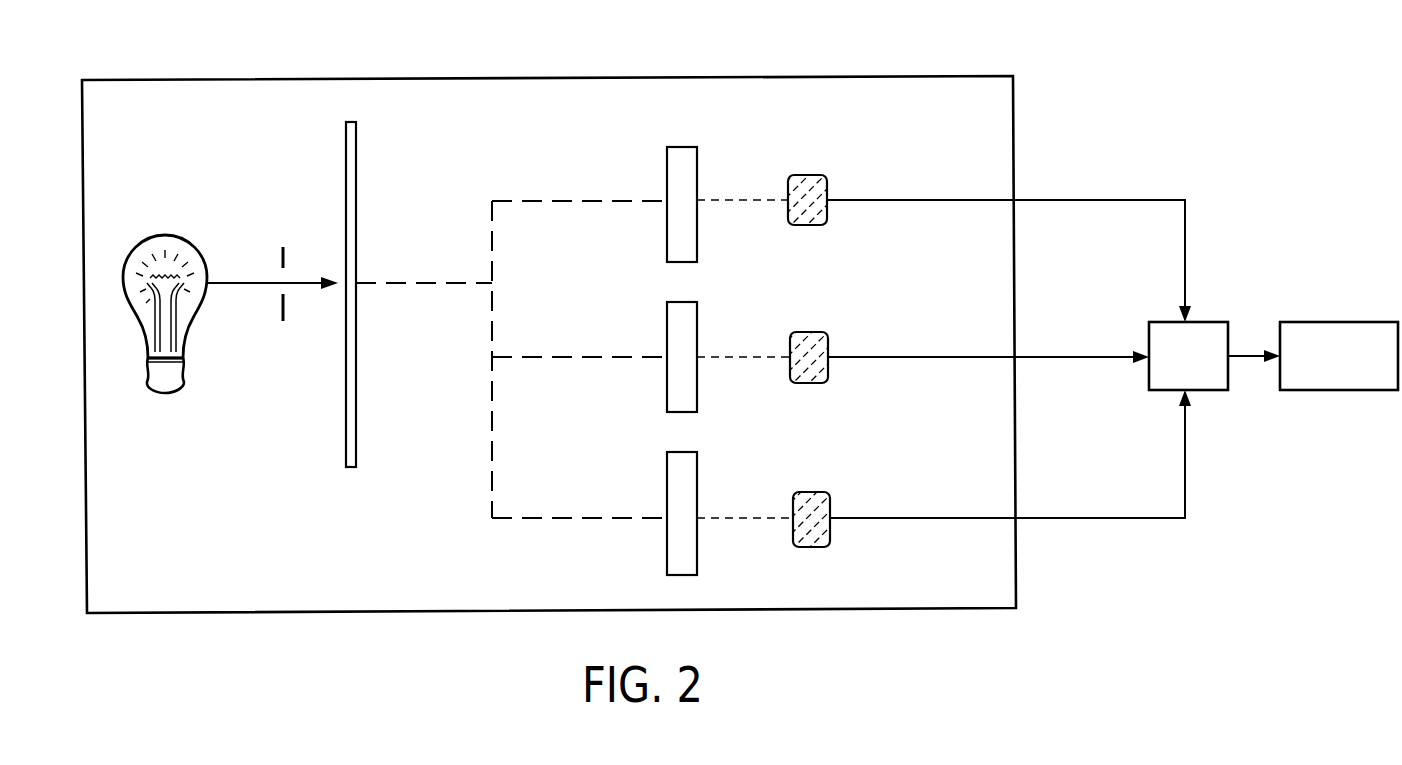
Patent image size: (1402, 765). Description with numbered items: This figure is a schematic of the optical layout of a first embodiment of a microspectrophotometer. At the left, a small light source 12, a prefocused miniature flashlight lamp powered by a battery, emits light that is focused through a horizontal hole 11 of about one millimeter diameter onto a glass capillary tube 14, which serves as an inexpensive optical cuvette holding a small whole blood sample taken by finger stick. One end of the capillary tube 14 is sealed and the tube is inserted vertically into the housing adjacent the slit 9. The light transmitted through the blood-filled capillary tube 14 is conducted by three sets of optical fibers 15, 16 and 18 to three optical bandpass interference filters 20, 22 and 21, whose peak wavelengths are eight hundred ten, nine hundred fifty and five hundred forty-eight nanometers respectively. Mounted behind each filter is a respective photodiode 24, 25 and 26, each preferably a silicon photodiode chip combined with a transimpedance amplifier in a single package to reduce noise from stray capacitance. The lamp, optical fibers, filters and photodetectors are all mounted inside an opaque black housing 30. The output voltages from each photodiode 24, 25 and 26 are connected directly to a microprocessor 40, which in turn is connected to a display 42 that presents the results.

The slit 9 is at (285, 260).
The horizontal hole 11 is at (282, 290).
The light source 12 is at (164, 236).
The capillary tube 14 is at (347, 433).
The optical fiber 15 is at (568, 518).
The optical fiber 16 is at (533, 202).
The optical fiber 18 is at (540, 357).
The interference filter 20 is at (665, 172).
The interference filter 21 is at (668, 488).
The interference filter 22 is at (667, 330).
The photodiode 24 is at (803, 175).
The photodiode 25 is at (810, 492).
The photodiode 26 is at (807, 332).
The housing 30 is at (722, 76).
The microprocessor 40 is at (1167, 322).
The display 42 is at (1317, 322).